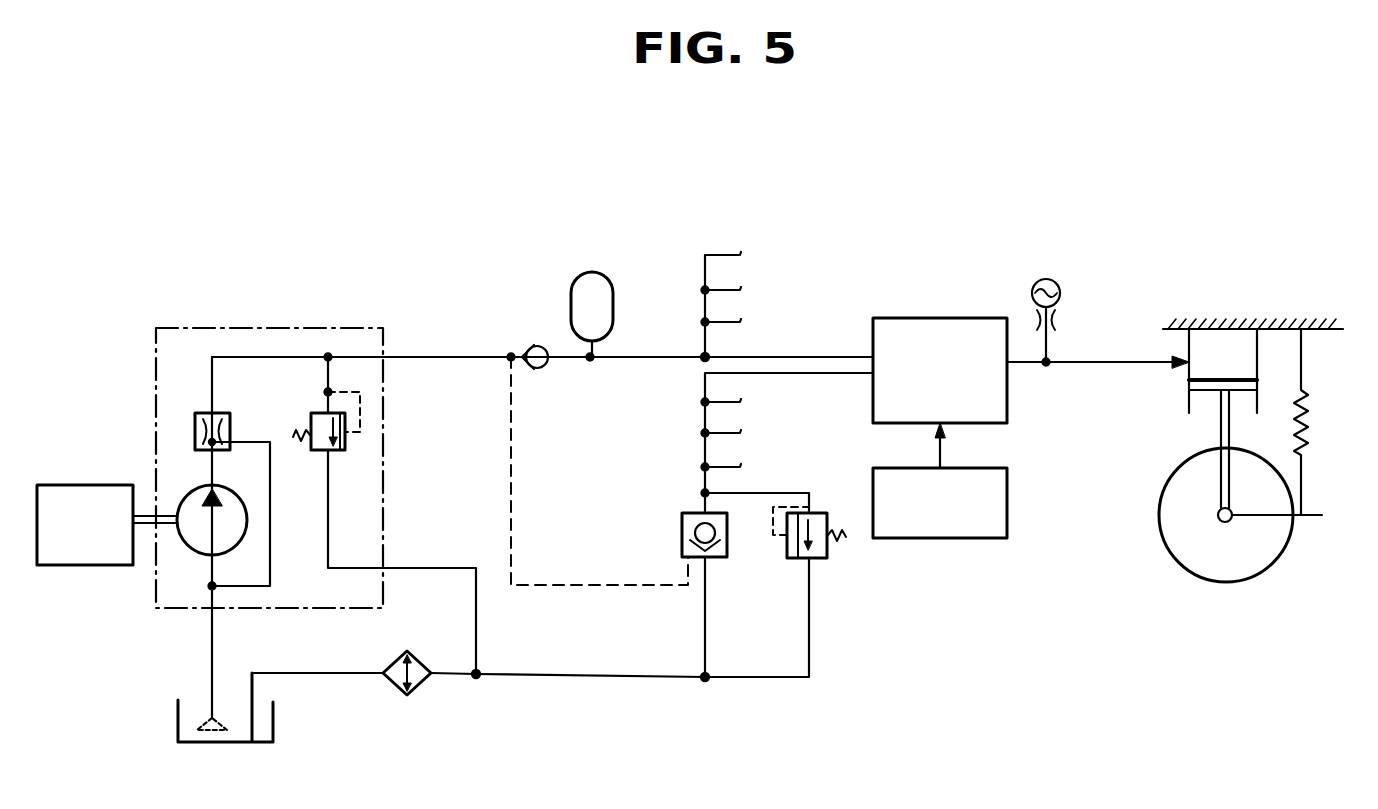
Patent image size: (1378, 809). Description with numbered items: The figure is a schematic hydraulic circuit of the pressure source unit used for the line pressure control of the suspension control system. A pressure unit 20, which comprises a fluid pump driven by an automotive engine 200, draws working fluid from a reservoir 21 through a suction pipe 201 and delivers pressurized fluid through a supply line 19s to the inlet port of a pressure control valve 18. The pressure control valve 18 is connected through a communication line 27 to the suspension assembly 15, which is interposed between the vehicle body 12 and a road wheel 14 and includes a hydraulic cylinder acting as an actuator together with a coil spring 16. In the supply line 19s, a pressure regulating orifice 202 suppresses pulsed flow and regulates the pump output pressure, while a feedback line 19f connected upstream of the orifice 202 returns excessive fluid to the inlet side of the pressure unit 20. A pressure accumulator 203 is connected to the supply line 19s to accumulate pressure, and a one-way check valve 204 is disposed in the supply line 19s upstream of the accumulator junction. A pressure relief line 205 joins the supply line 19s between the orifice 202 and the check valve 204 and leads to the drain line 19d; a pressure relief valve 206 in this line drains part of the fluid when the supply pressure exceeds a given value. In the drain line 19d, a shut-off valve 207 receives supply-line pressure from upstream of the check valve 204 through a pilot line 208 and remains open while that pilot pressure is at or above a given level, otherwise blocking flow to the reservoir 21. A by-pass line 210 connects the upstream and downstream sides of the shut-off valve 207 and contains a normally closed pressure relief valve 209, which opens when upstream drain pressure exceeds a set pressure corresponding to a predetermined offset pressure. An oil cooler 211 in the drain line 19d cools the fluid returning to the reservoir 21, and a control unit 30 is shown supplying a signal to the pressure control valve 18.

The vehicle body 12 is at (1260, 318).
The road wheel 14 is at (1224, 571).
The suspension assembly 15 is at (1189, 380).
The coil spring 16 is at (1302, 433).
The pressure control valve 18 is at (930, 318).
The supply line 19s is at (421, 356).
The drain line 19d is at (628, 678).
The feedback line 19f is at (270, 488).
The pressure unit 20 is at (197, 538).
The reservoir 21 is at (178, 716).
The communication line 27 is at (1033, 366).
The control unit 30 is at (952, 540).
The automotive engine 200 is at (84, 485).
The suction pipe 201 is at (212, 650).
The pressure regulating orifice 202 is at (195, 420).
The pressure accumulator 203 is at (614, 290).
The one-way check valve 204 is at (533, 348).
The pressure relief line 205 is at (330, 522).
The pressure relief valve 206 is at (345, 443).
The shut-off valve 207 is at (682, 548).
The pilot line 208 is at (511, 512).
The pressure relief valve 209 is at (827, 558).
The by-pass line 210 is at (809, 617).
The oil cooler 211 is at (420, 686).